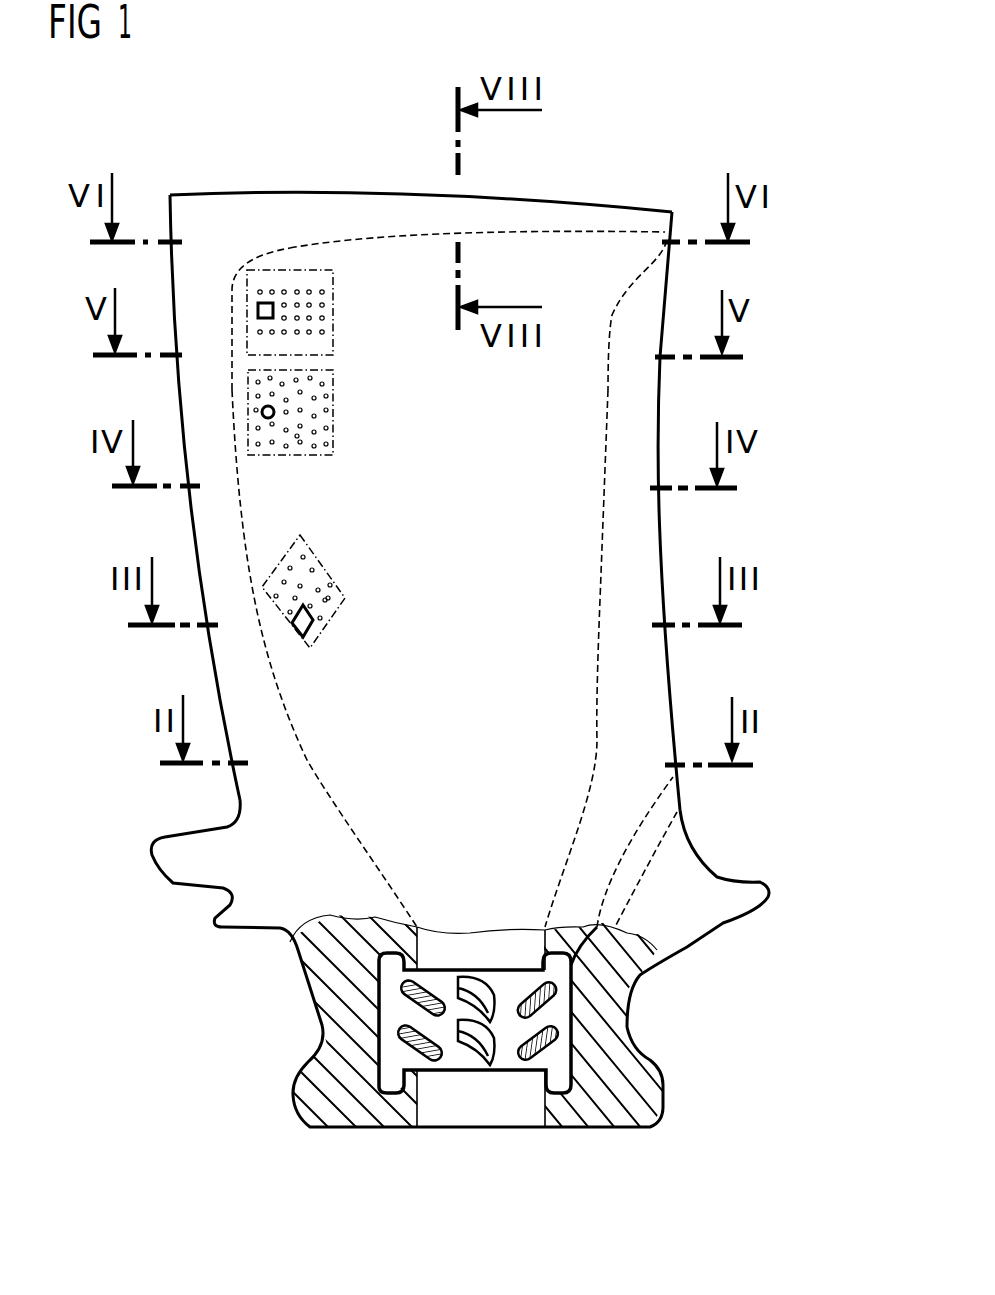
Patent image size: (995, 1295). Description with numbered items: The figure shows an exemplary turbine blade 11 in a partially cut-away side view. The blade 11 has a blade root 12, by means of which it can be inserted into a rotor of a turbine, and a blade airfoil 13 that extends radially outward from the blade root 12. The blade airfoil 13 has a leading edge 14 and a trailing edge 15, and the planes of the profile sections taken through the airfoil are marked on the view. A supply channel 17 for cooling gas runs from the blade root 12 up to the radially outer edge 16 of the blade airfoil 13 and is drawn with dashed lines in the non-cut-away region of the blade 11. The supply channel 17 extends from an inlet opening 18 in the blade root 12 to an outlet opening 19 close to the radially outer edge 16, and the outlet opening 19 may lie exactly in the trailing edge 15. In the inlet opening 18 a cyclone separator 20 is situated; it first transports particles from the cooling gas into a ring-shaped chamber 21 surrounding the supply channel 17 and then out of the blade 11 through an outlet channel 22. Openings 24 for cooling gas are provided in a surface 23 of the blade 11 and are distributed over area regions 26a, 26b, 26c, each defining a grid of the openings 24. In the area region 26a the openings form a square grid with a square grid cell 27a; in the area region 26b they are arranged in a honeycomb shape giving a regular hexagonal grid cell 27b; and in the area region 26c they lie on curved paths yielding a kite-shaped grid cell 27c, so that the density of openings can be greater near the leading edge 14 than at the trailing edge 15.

The blade 11 is at (637, 88).
The blade root 12 is at (610, 1053).
The blade airfoil 13 is at (557, 503).
The leading edge 14 is at (180, 527).
The trailing edge 15 is at (668, 396).
The radially outer edge 16 is at (378, 190).
The supply channel 17 is at (600, 647).
The inlet opening 18 is at (458, 1105).
The outlet opening 19 is at (648, 243).
The cyclone separator 20 is at (512, 1045).
The ring-shaped chamber 21 is at (392, 1058).
The outlet channel 22 is at (622, 860).
The surface 23 is at (578, 285).
The openings 24 is at (310, 290).
The area region 26a is at (333, 298).
The area region 26b is at (333, 402).
The area region 26c is at (330, 573).
The grid cell 27a is at (265, 303).
The grid cell 27b is at (262, 412).
The grid cell 27c is at (290, 627).